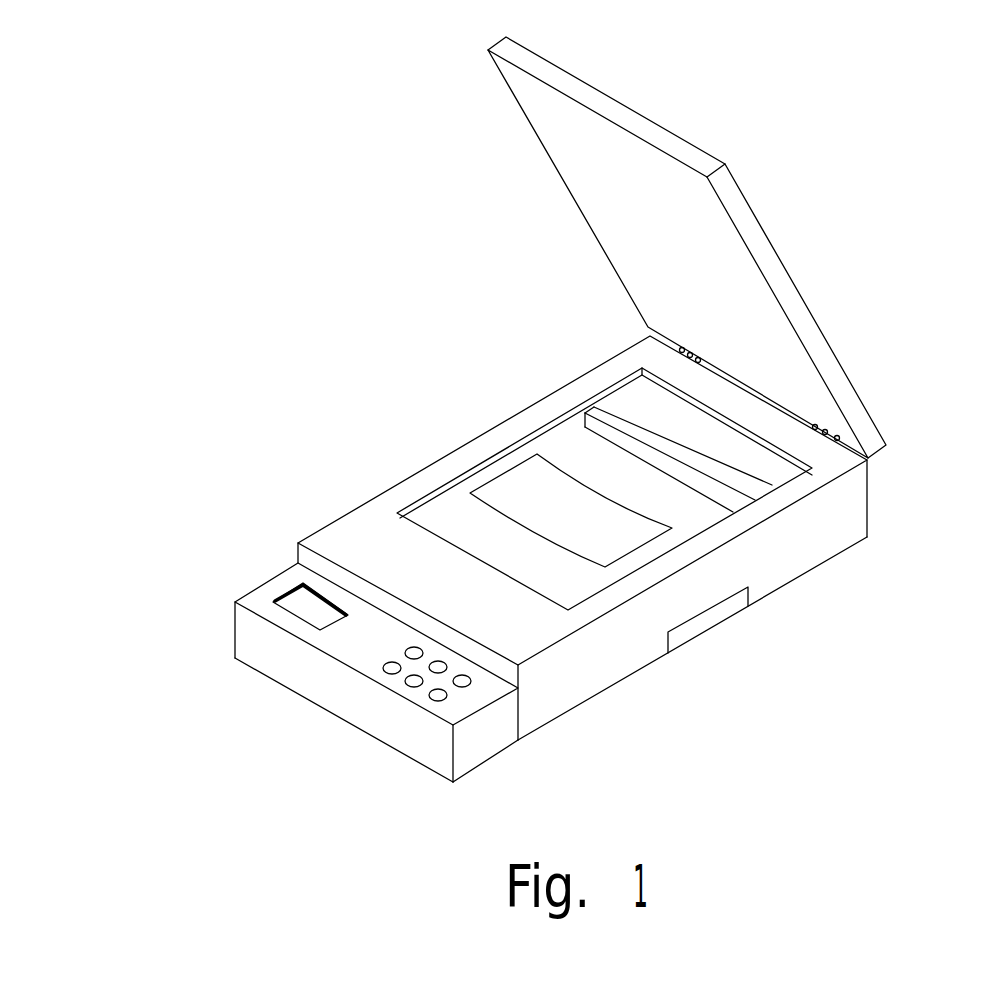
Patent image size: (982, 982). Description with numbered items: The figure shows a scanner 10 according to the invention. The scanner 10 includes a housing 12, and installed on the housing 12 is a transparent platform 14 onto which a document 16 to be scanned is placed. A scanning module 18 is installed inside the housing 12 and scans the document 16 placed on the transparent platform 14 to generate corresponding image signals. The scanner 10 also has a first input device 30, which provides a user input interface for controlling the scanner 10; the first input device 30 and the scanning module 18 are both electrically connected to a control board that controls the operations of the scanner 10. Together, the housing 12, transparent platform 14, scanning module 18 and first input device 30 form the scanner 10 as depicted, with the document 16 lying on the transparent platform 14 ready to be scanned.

The scanner 10 is at (366, 132).
The housing 12 is at (820, 533).
The transparent platform 14 is at (458, 520).
The document 16 is at (588, 522).
The scanning module 18 is at (636, 418).
The first input device 30 is at (263, 593).